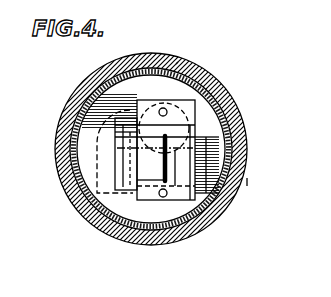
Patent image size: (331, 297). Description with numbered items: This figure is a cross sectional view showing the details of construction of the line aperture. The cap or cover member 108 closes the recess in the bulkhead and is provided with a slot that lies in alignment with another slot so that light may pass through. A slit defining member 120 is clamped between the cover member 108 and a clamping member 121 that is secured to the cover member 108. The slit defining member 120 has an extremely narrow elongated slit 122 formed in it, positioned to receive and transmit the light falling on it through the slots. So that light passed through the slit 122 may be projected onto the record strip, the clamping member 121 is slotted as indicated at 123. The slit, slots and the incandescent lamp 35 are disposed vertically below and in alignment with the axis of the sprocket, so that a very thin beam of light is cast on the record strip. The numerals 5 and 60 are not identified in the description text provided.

The housing 5 is at (100, 217).
The liner 60 is at (197, 227).
The cap member 108 is at (166, 86).
The clamping member 121 is at (196, 103).
The slot 123 is at (195, 137).
The slit defining member 120 is at (195, 156).
The incandescent lamp 35 is at (246, 183).
The slit 122 is at (230, 194).